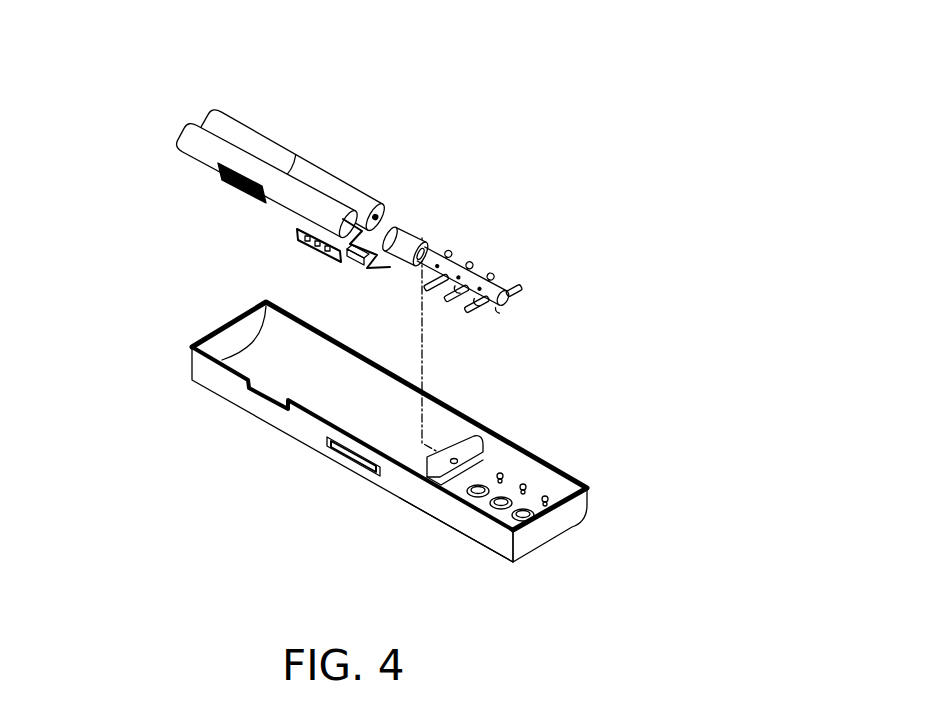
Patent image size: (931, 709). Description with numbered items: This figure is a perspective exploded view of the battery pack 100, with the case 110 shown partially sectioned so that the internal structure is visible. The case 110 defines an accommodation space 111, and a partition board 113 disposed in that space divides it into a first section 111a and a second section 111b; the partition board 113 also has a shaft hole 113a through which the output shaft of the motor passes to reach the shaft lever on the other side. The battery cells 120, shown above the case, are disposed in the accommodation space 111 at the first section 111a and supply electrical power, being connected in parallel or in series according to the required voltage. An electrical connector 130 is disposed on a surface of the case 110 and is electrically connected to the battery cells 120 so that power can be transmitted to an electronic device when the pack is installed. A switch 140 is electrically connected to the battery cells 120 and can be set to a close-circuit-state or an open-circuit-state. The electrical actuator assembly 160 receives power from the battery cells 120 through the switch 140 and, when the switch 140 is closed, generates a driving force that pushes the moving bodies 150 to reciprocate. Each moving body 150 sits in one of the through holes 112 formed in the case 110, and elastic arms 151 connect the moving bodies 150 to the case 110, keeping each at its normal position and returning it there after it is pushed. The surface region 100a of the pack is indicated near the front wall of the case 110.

The battery pack 100 is at (528, 165).
The front surface of housing 100a is at (433, 520).
The case 110 is at (194, 343).
The accommodation space 111 is at (340, 479).
The first section 111a is at (311, 399).
The second section 111b is at (437, 496).
The through holes 112 is at (478, 505).
The partition board 113 is at (485, 436).
The shaft hole 113a is at (458, 458).
The battery cells 120 is at (317, 160).
The electrical connector 130 is at (213, 178).
The switch 140 is at (336, 224).
The moving bodies 150 is at (470, 240).
The elastic arms 151 is at (676, 383).
The electrical actuator assembly 160 is at (425, 224).